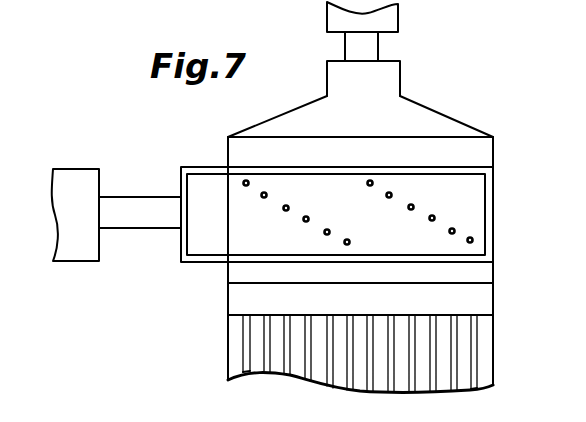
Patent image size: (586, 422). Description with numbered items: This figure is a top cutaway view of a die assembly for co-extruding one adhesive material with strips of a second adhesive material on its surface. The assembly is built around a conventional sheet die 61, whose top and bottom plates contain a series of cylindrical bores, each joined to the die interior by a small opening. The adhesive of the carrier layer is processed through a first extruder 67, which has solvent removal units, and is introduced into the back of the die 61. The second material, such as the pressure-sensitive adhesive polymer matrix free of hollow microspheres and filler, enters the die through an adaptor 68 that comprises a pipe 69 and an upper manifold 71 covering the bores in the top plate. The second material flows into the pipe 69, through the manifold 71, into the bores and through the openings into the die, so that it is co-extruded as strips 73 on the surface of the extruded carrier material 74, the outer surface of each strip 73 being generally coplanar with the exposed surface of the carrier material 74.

The sheet die 61 is at (494, 290).
The first extruder 67 is at (398, 17).
The adaptor 68 is at (183, 261).
The pipe 69 is at (156, 197).
The upper manifold 71 is at (448, 167).
The strips 73 is at (477, 335).
The carrier material 74 is at (478, 369).